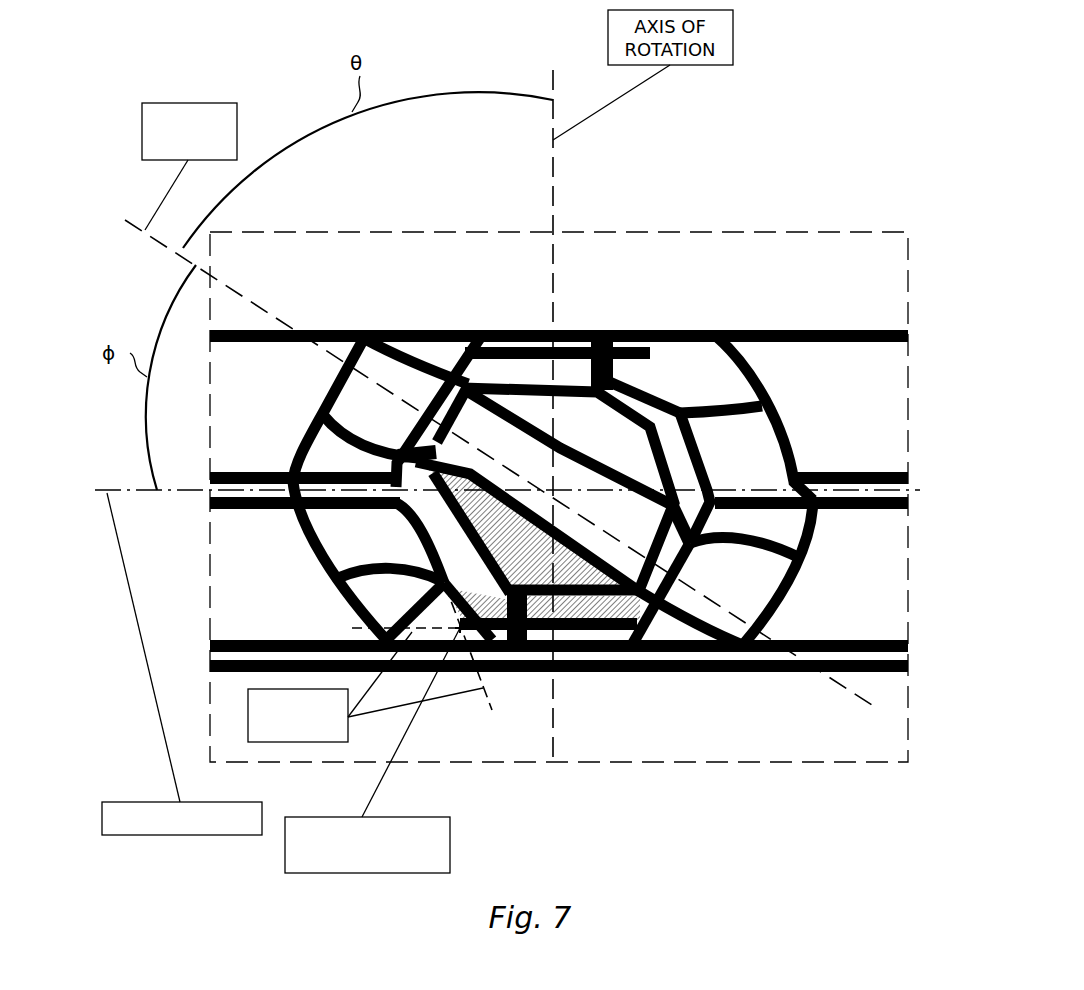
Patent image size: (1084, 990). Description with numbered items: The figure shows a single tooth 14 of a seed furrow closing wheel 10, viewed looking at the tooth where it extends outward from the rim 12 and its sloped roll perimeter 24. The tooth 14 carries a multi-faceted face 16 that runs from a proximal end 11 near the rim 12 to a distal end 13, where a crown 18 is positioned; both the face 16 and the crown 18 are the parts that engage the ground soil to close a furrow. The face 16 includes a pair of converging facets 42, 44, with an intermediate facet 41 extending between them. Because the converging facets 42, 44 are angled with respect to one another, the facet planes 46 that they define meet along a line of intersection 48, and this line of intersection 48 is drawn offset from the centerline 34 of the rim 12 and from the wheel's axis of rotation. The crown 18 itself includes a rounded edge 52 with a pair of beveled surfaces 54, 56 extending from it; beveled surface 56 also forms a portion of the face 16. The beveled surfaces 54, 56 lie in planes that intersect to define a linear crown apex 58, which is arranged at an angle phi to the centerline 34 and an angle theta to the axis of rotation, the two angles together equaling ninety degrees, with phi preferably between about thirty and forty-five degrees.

The seed furrow closing wheel 10 is at (863, 75).
The proximal end 11 is at (710, 398).
The rim 12 is at (848, 318).
The distal end 13 is at (620, 385).
The tooth 14 is at (683, 356).
The multi-faceted face 16 is at (558, 702).
The crown 18 is at (474, 418).
The sloped roll perimeter 24 is at (870, 360).
The centerline 34 is at (104, 802).
The intermediate facet 41 is at (499, 688).
The converging facet 42 is at (598, 632).
The converging facet 44 is at (473, 534).
The facet planes 46 is at (257, 677).
The line of intersection 48 is at (450, 832).
The rounded edge 52 is at (482, 368).
The beveled surface 54 is at (570, 402).
The beveled surface 56 is at (393, 572).
The crown apex 58 is at (222, 103).